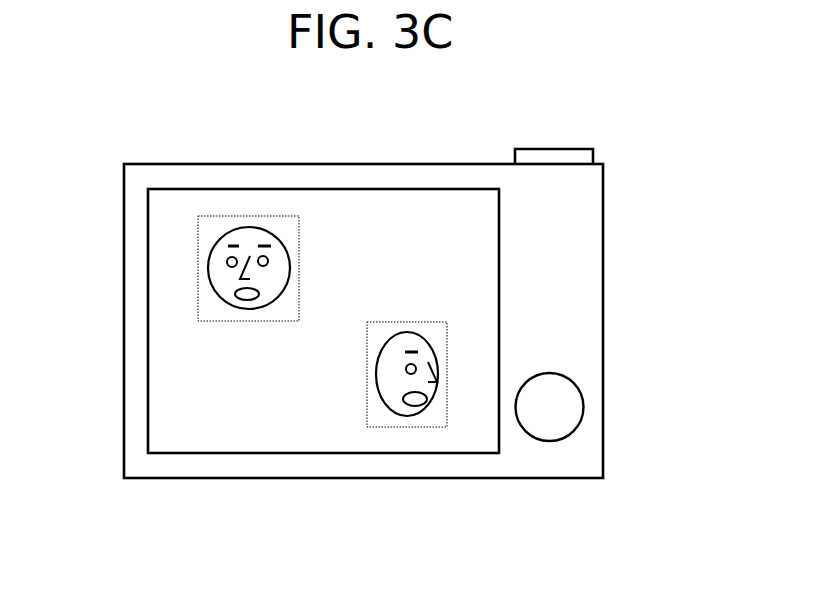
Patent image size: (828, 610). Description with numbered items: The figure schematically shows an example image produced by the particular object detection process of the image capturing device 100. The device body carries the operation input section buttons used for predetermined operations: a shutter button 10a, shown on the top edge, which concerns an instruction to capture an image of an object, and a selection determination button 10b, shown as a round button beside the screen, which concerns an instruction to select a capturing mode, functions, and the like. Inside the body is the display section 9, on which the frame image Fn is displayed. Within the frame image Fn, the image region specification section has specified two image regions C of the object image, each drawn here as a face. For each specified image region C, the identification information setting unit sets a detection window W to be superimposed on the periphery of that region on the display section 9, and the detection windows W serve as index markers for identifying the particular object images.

The image capturing device 100 is at (390, 97).
The display section 9 is at (500, 248).
The shutter button 10a is at (563, 148).
The selection determination button 10b is at (583, 400).
The frame image Fn is at (427, 189).
The detection window W is at (203, 269).
The image region C is at (255, 222).